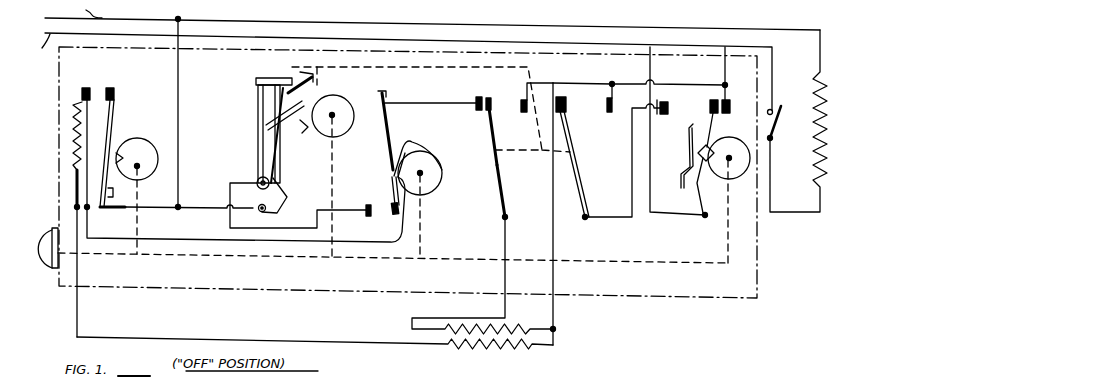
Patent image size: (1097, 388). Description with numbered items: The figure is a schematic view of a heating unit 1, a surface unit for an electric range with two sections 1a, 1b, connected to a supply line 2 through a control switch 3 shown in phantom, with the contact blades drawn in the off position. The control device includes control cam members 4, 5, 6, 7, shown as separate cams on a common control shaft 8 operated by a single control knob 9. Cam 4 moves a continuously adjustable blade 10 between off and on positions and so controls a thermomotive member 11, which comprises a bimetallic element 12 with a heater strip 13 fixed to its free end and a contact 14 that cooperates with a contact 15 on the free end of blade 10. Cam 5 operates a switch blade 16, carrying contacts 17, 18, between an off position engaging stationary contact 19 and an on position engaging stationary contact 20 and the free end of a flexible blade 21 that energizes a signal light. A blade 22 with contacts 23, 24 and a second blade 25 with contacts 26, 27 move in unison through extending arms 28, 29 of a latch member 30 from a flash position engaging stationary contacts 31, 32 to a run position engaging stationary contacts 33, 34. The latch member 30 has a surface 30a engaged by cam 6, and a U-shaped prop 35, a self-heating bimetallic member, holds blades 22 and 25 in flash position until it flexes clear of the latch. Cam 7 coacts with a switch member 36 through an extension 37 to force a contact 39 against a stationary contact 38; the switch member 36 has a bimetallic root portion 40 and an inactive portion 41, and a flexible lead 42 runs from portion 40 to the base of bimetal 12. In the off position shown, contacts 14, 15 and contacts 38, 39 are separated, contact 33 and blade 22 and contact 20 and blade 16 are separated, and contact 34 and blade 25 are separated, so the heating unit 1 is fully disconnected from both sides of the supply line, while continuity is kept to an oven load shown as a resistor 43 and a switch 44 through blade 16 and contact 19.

The heating unit 1 is at (331, 293).
The section of heating unit 1a is at (530, 326).
The section of heating unit 1b is at (490, 346).
The supply line 2 is at (42, 46).
The control switch 3 is at (722, 308).
The control cam 4 is at (141, 150).
The control cam 5 is at (736, 148).
The control cam 6 is at (351, 121).
The control cam 7 is at (445, 173).
The control shaft 8 is at (222, 255).
The control knob 9 is at (45, 270).
The adjustable blade 10 is at (117, 110).
The thermomotive member 11 is at (72, 131).
The bimetallic element 12 is at (89, 208).
The heater strip 13 is at (72, 160).
The contact 14 is at (88, 88).
The contact 15 is at (112, 88).
The switch blade 16 is at (699, 182).
The contact 17 is at (722, 98).
The contact 18 is at (710, 106).
The stationary contact 19 is at (731, 106).
The stationary contact 20 is at (664, 115).
The flexible blade 21 is at (687, 151).
The blade 22 is at (580, 178).
The contact 23 is at (567, 115).
The contact 24 is at (567, 99).
The blade 25 is at (505, 176).
The contact 26 is at (488, 116).
The contact 27 is at (490, 99).
The extending arm 28 is at (306, 105).
The extending arm 29 is at (266, 124).
The latch member 30 is at (280, 80).
The surface 30a is at (291, 135).
The stationary contact 31 is at (552, 82).
The stationary contact 32 is at (477, 100).
The stationary contact 33 is at (610, 112).
The stationary contact 34 is at (523, 112).
The U-shaped prop 35 is at (258, 102).
The switch member 36 is at (370, 166).
The extension 37 is at (396, 160).
The stationary contact 38 is at (368, 217).
The contact 39 is at (392, 216).
The bimetallic root portion 40 is at (388, 110).
The inactive portion 41 is at (394, 192).
The flexible lead 42 is at (403, 223).
The resistor 43 is at (813, 177).
The switch 44 is at (779, 126).